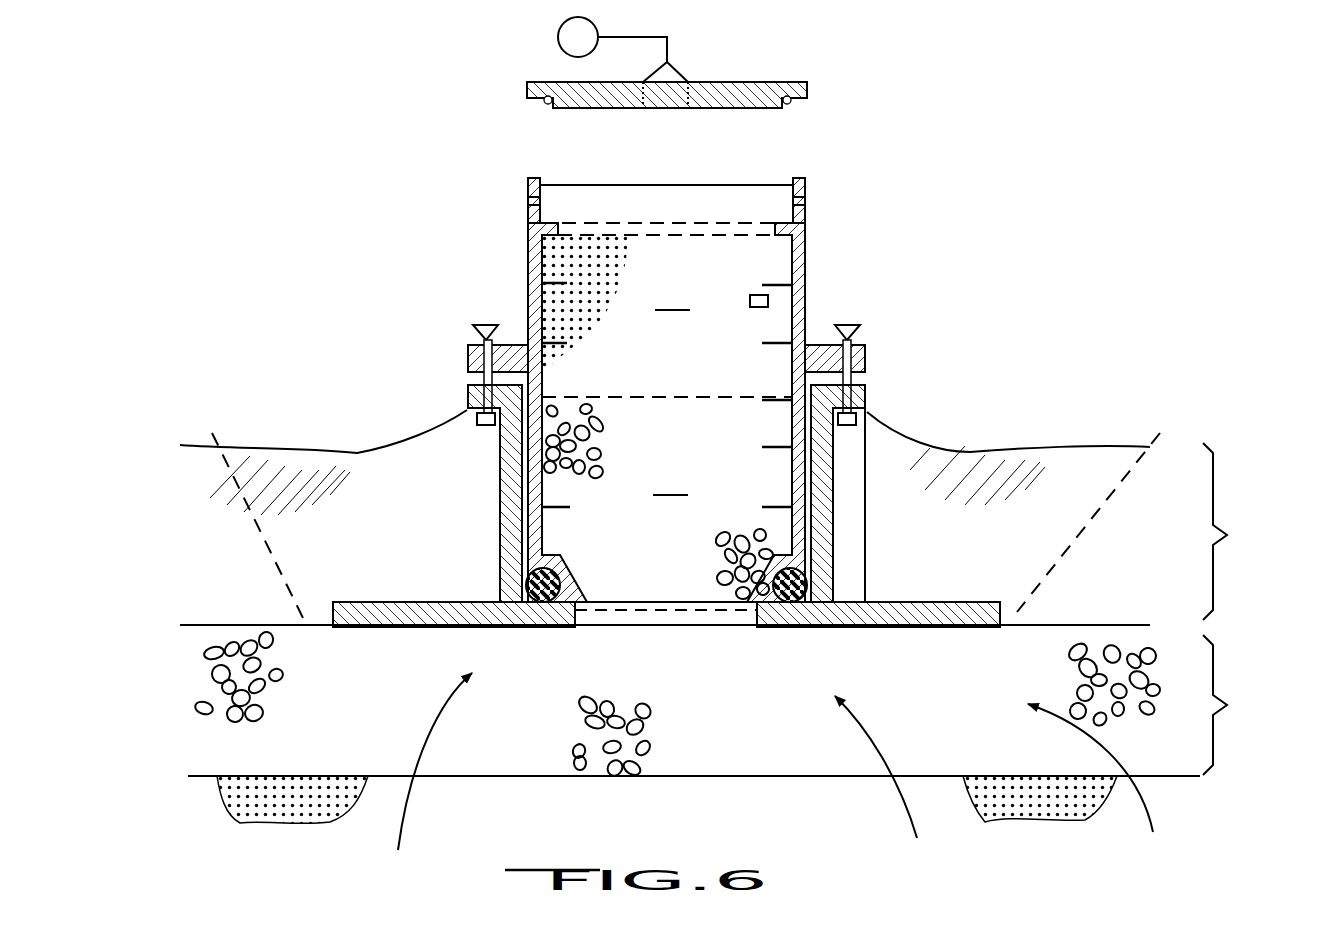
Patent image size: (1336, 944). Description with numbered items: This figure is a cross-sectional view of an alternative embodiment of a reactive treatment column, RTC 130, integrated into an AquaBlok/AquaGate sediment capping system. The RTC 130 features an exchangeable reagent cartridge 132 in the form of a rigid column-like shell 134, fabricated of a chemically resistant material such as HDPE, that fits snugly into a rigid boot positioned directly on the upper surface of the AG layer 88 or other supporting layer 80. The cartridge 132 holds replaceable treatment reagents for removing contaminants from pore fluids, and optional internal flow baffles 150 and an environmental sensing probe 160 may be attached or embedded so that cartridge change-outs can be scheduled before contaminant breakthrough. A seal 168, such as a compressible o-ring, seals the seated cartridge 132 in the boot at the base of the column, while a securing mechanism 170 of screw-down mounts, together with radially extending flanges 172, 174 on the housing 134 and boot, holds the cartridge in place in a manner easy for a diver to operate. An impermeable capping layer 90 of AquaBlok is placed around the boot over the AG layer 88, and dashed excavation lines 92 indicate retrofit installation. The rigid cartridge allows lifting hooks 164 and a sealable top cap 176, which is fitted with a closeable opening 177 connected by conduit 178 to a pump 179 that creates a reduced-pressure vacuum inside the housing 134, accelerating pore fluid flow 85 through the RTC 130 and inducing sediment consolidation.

The supporting layer 80 is at (1230, 627).
The fluid flow arrows 85 is at (1048, 716).
The AG layer 88 is at (732, 726).
The impermeable capping layer 90 is at (1239, 531).
The excavation lines 92 is at (268, 547).
The RTC 130 is at (455, 180).
The exchangeable reagent cartridge 132 is at (478, 245).
The rigid column-like shell 134 is at (528, 278).
The internal flow baffles 150 is at (777, 343).
The environmental sensing probe 160 is at (752, 296).
The lifting hooks 164 is at (805, 202).
The seal 168 is at (524, 588).
The securing mechanism 170 is at (440, 374).
The radially extending flange 172 is at (865, 350).
The radially extending flange 174 is at (865, 392).
The sealable top cap 176 is at (748, 67).
The closeable opening 177 is at (688, 90).
The conduit 178 is at (625, 37).
The pump 179 is at (558, 37).